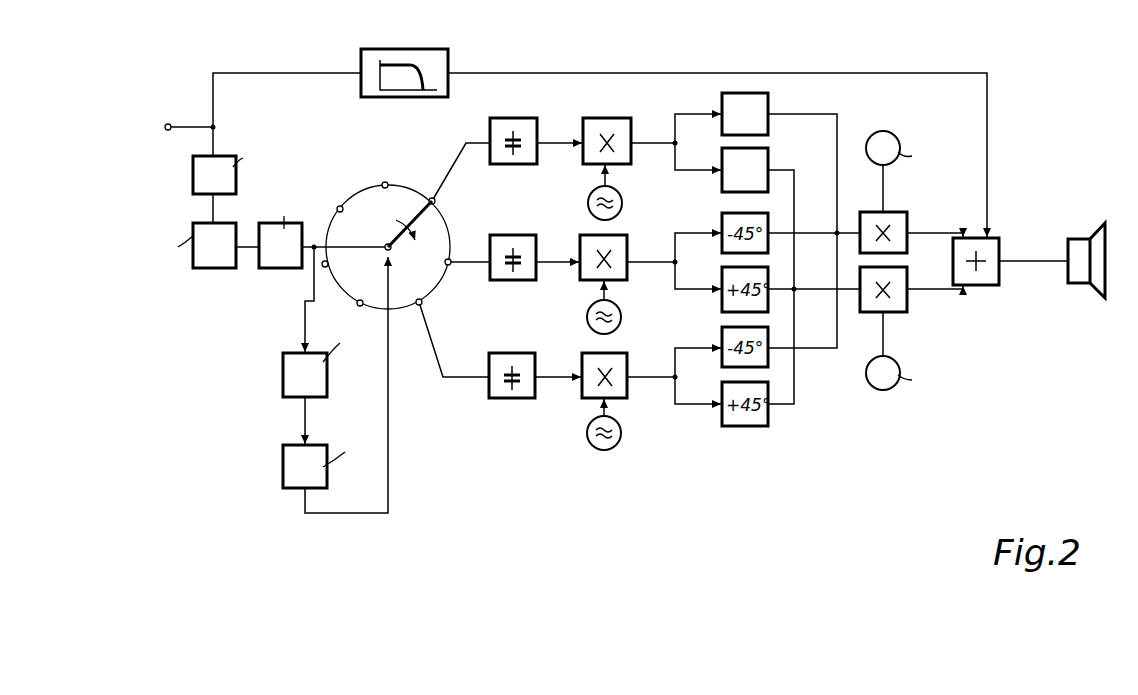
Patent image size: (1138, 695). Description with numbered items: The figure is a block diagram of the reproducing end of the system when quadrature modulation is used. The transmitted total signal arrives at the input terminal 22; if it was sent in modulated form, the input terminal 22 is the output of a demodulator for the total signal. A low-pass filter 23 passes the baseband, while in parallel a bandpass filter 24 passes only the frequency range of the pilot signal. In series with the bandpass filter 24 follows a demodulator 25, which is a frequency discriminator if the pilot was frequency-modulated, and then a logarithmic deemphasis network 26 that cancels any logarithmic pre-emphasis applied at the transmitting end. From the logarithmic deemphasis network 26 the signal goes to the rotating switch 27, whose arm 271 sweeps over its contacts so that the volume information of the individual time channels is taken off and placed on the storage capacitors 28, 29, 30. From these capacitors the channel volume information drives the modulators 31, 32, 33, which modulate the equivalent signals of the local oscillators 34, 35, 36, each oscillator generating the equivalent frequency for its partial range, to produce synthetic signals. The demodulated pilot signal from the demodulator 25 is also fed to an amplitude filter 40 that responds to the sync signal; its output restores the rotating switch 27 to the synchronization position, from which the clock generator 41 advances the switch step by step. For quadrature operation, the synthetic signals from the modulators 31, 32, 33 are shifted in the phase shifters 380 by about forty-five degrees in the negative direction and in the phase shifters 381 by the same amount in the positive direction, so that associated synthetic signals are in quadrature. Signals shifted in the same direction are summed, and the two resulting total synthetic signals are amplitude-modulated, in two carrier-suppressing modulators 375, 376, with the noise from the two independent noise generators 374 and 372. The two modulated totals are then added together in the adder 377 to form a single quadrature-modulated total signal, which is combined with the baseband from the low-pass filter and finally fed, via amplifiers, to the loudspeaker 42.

The input terminal 22 is at (150, 122).
The low-pass filter 23 is at (407, 56).
The bandpass filter 24 is at (199, 172).
The demodulator 25 is at (213, 266).
The logarithmic deemphasis network 26 is at (284, 266).
The rotating switch 27 is at (386, 242).
The switch arm 271 is at (430, 197).
The storage capacitor 28 is at (518, 123).
The storage capacitor 29 is at (514, 240).
The storage capacitor 30 is at (510, 359).
The modulator 31 is at (607, 123).
The modulator 32 is at (621, 251).
The modulator 33 is at (621, 367).
The local oscillator 34 is at (589, 202).
The local oscillator 35 is at (588, 317).
The local oscillator 36 is at (588, 433).
The phase shifter 380 is at (766, 101).
The phase shifter 381 is at (725, 187).
The noise generator 374 is at (884, 131).
The noise generator 372 is at (887, 390).
The multiplier 375 is at (897, 212).
The multiplier 376 is at (907, 308).
The adder 377 is at (999, 279).
The loudspeaker 42 is at (1097, 229).
The amplitude filter 40 is at (290, 375).
The clock generator 41 is at (290, 467).